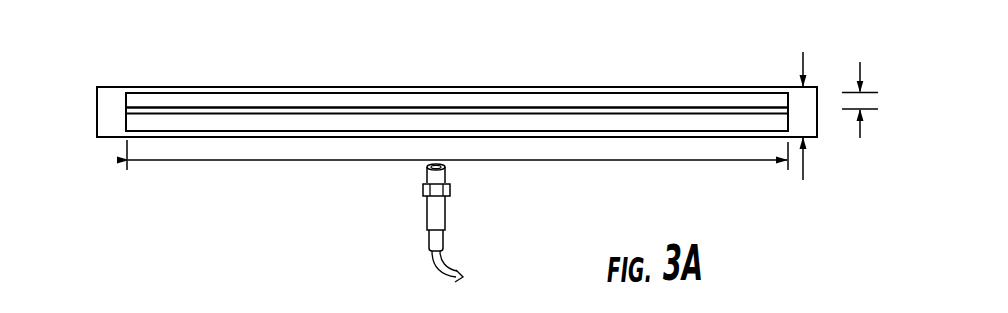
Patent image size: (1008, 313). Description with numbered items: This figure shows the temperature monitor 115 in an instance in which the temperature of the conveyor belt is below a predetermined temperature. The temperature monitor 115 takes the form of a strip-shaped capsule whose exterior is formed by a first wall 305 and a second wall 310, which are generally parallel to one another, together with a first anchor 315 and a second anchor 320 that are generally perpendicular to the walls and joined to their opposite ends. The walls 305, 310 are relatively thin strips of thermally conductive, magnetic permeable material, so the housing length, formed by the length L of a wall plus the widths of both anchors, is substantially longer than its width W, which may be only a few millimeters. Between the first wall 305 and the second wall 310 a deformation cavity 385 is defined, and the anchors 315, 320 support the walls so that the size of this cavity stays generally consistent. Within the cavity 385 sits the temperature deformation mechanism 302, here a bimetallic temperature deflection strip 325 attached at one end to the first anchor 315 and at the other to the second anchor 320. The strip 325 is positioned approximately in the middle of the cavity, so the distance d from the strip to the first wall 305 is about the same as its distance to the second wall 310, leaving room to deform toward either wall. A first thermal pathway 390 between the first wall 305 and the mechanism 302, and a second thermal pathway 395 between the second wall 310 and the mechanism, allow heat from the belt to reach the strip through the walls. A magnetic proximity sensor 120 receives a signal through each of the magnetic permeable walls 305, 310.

The temperature monitor 115 is at (319, 46).
The first wall 305 is at (154, 83).
The first anchor 315 is at (87, 115).
The second wall 310 is at (174, 142).
The second anchor 320 is at (810, 87).
The first thermal pathway 390 is at (263, 100).
The second thermal pathway 395 is at (293, 125).
The temperature deformation mechanism 302 is at (457, 68).
The temperature deflection strip 325 is at (506, 107).
The deformation cavity 385 is at (683, 101).
The magnetic proximity sensor 120 is at (445, 205).
The length L is at (622, 161).
The width W is at (803, 162).
The distance d is at (871, 100).